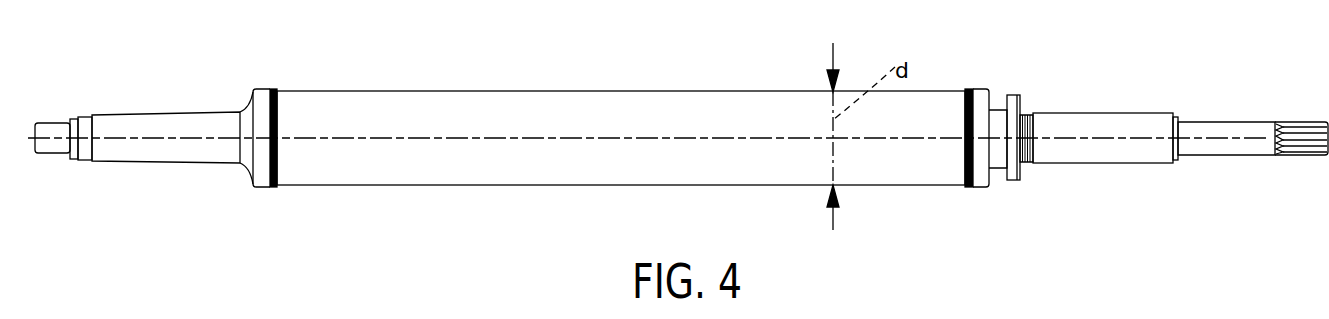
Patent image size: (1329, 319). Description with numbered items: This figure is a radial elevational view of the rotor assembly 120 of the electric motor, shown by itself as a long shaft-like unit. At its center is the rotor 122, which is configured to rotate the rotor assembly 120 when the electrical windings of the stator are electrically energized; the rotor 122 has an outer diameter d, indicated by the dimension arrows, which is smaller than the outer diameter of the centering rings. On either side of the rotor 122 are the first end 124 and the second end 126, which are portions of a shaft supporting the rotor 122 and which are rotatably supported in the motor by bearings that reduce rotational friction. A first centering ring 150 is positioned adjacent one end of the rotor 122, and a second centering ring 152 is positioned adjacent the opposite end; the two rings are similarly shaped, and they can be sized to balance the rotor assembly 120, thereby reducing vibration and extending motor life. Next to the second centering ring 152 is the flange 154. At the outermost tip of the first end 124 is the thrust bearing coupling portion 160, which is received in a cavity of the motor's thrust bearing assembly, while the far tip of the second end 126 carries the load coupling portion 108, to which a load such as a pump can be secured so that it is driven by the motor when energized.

The rotor assembly 120 is at (527, 91).
The rotor 122 is at (455, 110).
The first end 124 is at (183, 122).
The second end 126 is at (1073, 123).
The first centering ring 150 is at (262, 180).
The second centering ring 152 is at (978, 180).
The flange 154 is at (1012, 175).
The thrust bearing coupling portion 160 is at (48, 122).
The load coupling portion 108 is at (1298, 157).